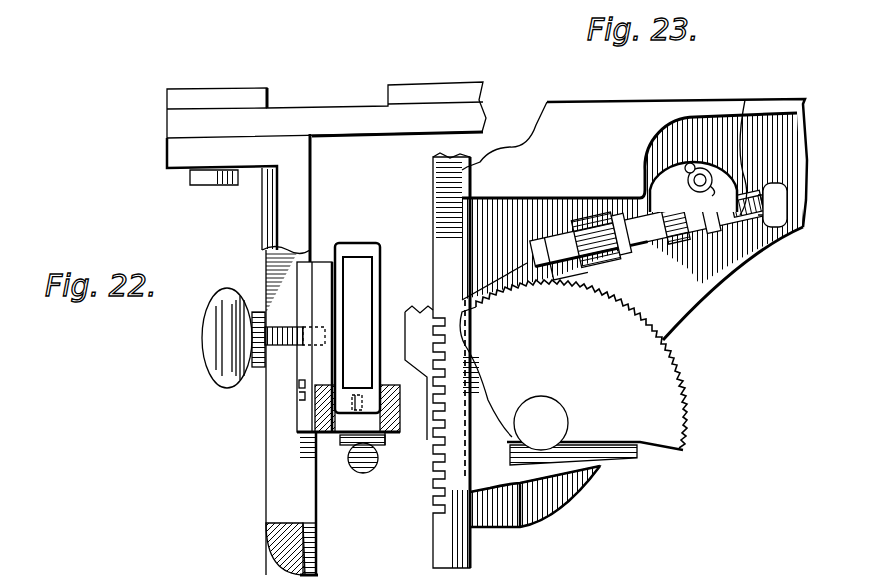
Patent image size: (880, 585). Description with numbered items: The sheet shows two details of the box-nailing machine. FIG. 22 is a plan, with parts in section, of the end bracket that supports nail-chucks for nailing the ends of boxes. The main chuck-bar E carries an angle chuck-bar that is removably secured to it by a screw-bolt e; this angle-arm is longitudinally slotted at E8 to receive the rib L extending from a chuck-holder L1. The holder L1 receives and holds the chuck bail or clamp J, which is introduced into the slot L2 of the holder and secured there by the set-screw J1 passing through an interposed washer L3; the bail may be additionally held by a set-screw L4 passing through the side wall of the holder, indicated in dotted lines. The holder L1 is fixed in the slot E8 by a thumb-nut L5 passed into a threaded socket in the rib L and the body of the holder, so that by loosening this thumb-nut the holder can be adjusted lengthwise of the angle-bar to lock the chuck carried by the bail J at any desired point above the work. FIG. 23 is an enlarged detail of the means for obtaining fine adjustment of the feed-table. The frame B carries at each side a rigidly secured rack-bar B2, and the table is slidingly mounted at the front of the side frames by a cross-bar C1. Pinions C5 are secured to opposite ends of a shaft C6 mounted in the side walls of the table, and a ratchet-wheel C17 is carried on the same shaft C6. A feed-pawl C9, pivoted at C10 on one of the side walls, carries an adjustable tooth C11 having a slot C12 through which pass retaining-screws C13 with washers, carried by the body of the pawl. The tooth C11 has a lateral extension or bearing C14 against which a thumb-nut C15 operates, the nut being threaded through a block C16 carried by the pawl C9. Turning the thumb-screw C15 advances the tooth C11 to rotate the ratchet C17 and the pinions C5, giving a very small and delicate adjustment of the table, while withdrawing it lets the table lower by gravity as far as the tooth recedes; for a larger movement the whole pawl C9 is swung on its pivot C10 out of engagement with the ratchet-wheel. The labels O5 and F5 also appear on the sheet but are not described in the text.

In FIG. 22, the lever O5 is at (248, 15).
In FIG. 22, the chuck-bar E is at (326, 110).
In FIG. 22, the screw-bolt e is at (188, 178).
In FIG. 22, the slot E8 is at (266, 465).
In FIG. 22, the foot F5 is at (266, 563).
In FIG. 22, the chuck bail J is at (368, 230).
In FIG. 22, the set-screw J1 is at (366, 470).
In FIG. 22, the rib L is at (300, 388).
In FIG. 22, the chuck-holder L1 is at (393, 440).
In FIG. 22, the slot L2 is at (352, 448).
In FIG. 22, the washer L3 is at (390, 446).
In FIG. 22, the set-screw L4 is at (299, 398).
In FIG. 22, the thumb-nut L5 is at (202, 348).
In FIG. 22, the frame B is at (433, 240).
In FIG. 22, the rack-bar B2 is at (413, 310).
In FIG. 23, the cross-bar C1 is at (680, 242).
In FIG. 23, the pinions C5 is at (486, 390).
In FIG. 23, the shaft C6 is at (541, 423).
In FIG. 23, the feed-pawl C9 is at (740, 240).
In FIG. 23, the pivot C10 is at (688, 180).
In FIG. 23, the adjustable tooth C11 is at (560, 268).
In FIG. 23, the slot C12 is at (625, 250).
In FIG. 23, the retaining-screws C13 is at (658, 248).
In FIG. 23, the lateral extension or bearing C14 is at (700, 250).
In FIG. 23, the thumb-nut C15 is at (782, 177).
In FIG. 23, the block C16 is at (748, 95).
In FIG. 23, the ratchet-wheel C17 is at (581, 364).